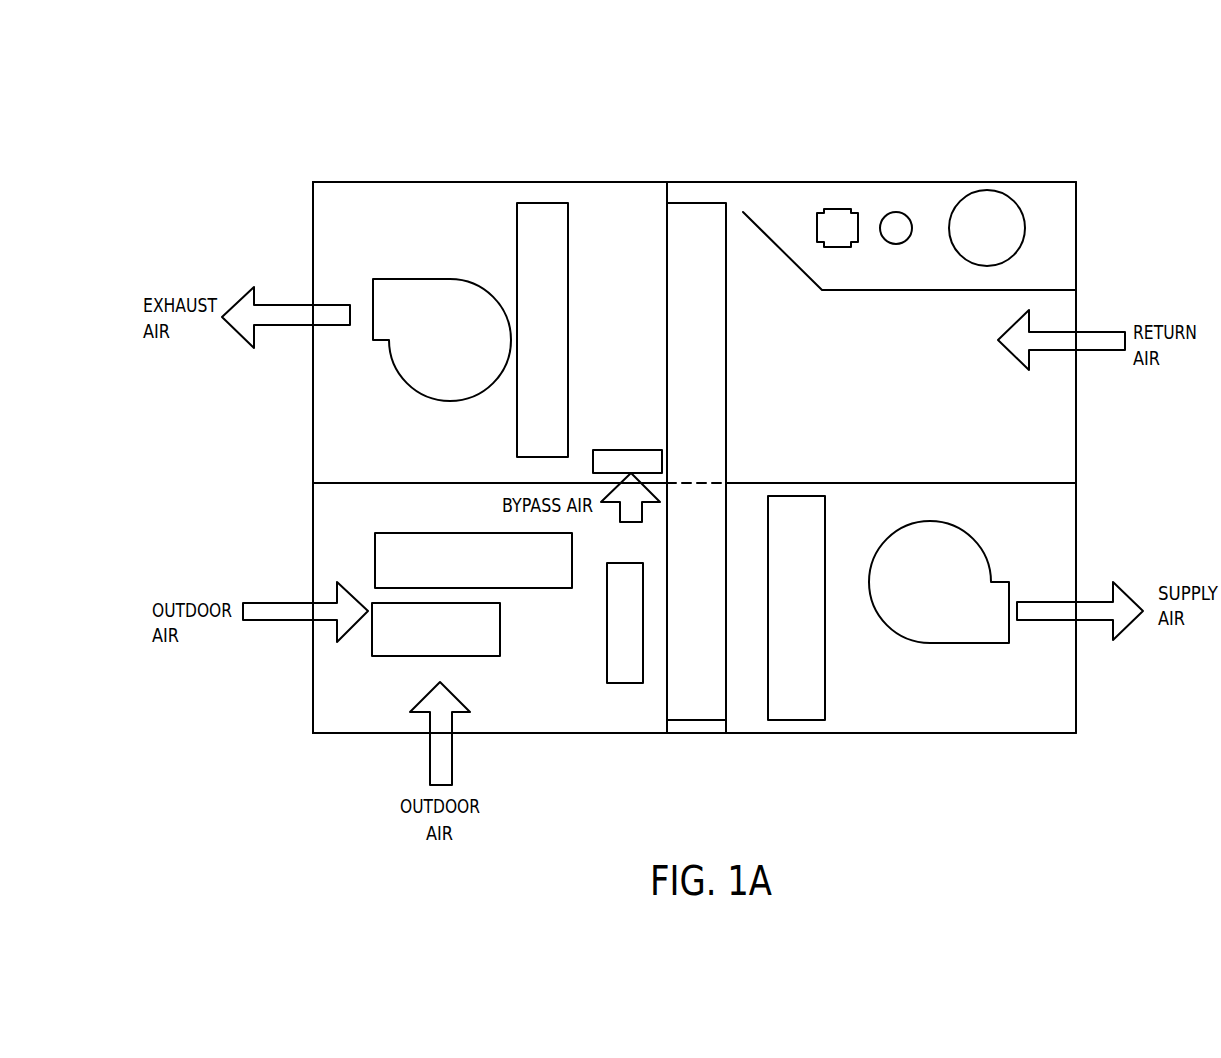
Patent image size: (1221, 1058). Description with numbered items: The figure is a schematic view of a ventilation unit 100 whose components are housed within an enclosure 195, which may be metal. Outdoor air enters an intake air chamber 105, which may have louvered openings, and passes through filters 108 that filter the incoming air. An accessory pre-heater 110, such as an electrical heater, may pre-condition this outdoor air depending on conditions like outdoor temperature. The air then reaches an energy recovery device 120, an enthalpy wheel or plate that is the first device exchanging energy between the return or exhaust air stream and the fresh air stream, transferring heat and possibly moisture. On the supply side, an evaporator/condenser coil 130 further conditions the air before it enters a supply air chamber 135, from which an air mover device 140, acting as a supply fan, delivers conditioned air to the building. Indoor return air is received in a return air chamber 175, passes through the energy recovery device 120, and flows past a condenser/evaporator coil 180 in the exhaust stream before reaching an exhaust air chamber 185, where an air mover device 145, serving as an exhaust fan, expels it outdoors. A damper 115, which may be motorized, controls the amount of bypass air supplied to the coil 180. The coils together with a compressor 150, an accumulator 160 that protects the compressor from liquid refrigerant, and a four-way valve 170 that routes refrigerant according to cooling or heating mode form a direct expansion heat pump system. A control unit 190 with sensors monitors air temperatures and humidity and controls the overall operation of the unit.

The ventilation unit 100 is at (192, 116).
The exhaust air chamber 185 is at (373, 196).
The air mover device 145 is at (413, 279).
The condenser/evaporator coil 180 is at (537, 203).
The energy recovery device 120 is at (692, 203).
The four-way valve 170 is at (838, 209).
The accumulator 160 is at (898, 212).
The compressor 150 is at (992, 190).
The enclosure 195 is at (313, 410).
The return air chamber 175 is at (1066, 435).
The damper 115 is at (625, 450).
The control unit 190 is at (375, 546).
The filters 108 is at (500, 625).
The accessory pre-heater 110 is at (625, 683).
The evaporator/condenser coil 130 is at (796, 720).
The air mover device 140 is at (980, 643).
The intake air chamber 105 is at (541, 723).
The supply air chamber 135 is at (900, 720).